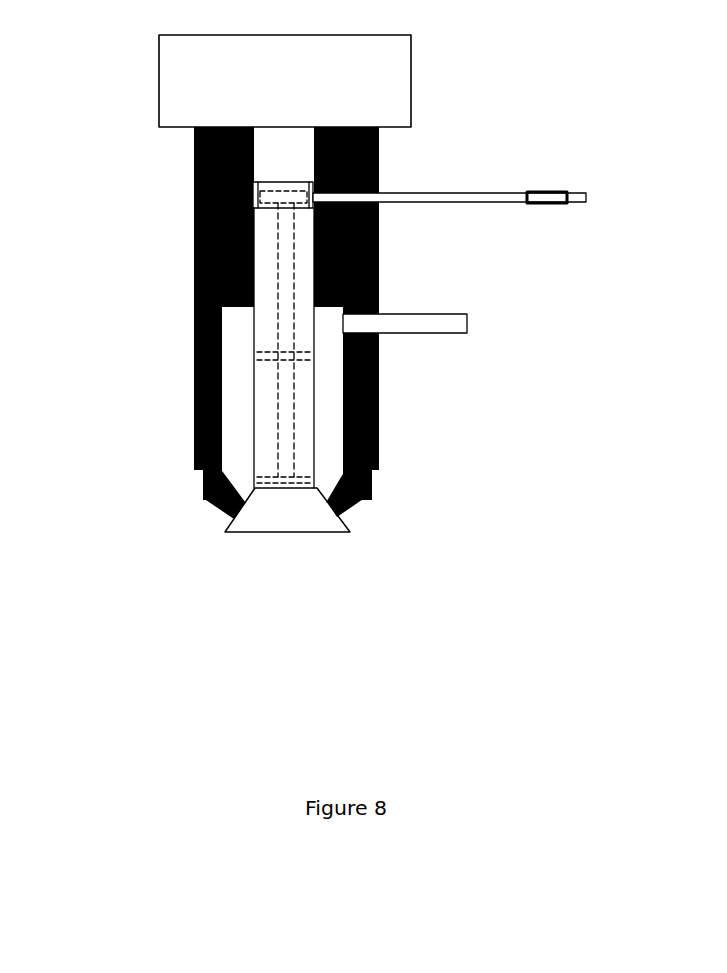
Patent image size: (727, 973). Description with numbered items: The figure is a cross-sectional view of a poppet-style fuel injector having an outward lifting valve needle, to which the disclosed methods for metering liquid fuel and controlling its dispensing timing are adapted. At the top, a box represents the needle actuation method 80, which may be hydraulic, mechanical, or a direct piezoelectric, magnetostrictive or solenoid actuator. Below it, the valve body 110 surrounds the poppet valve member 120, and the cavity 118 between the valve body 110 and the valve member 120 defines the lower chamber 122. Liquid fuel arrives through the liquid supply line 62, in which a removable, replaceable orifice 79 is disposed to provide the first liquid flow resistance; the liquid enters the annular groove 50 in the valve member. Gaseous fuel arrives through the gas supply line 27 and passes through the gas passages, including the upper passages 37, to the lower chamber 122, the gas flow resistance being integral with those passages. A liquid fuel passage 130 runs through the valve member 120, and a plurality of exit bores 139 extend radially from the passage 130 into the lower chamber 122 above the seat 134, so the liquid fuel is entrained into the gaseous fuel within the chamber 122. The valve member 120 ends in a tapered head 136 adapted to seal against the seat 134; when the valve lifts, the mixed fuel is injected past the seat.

The needle actuation method 80 is at (173, 100).
The annular groove 50 is at (197, 218).
The valve body 110 is at (197, 280).
The poppet valve member 120 is at (263, 378).
The cavity 118 is at (230, 428).
The lower chamber 122 is at (203, 480).
The liquid fuel passage 130 is at (283, 415).
The exit bores 139 is at (298, 480).
The upper passages 37 is at (313, 357).
The gas supply line 27 is at (493, 323).
The liquid supply line 62 is at (605, 198).
The orifice 79 is at (547, 208).
The seat 134 is at (337, 503).
The tapered head 136 is at (275, 507).